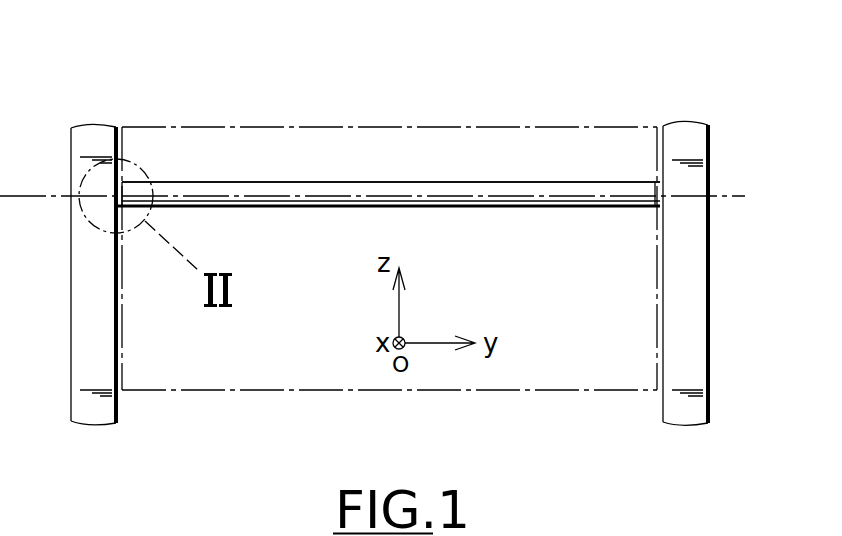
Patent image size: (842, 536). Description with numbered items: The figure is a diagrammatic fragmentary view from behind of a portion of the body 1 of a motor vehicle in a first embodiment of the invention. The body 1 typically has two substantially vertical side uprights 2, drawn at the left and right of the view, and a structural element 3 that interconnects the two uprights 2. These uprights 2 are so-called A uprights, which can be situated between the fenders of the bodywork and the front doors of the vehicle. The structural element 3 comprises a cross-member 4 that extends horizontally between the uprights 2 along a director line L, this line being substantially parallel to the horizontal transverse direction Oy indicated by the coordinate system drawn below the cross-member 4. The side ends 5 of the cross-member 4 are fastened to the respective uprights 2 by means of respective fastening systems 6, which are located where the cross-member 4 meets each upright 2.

The body 1 is at (622, 82).
The side uprights 2 is at (113, 118).
The structural element 3 is at (425, 162).
The cross-member 4 is at (328, 176).
The side ends 5 is at (142, 187).
The fastening systems 6 is at (135, 166).
The director line L is at (681, 197).